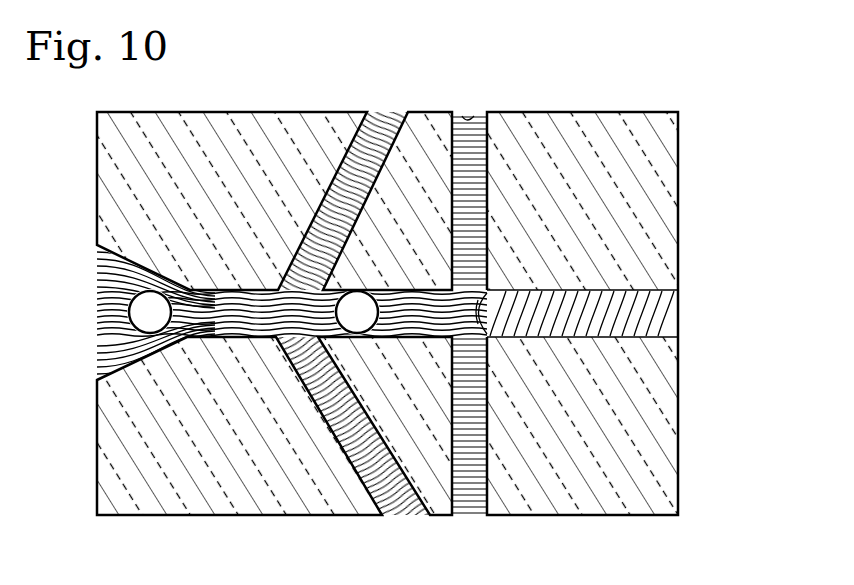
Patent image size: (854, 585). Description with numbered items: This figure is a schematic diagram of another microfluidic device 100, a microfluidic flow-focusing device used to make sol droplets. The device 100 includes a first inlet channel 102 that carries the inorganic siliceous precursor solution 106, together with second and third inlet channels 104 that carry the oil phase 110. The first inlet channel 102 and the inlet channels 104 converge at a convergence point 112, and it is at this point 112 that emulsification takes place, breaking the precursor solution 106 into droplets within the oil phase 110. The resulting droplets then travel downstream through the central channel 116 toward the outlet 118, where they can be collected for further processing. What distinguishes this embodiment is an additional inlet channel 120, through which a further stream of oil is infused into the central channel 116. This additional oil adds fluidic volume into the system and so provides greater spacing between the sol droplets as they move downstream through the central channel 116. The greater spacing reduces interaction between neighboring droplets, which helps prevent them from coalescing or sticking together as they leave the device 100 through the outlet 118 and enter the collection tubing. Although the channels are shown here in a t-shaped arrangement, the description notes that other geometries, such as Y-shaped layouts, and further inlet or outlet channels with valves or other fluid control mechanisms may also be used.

The microfluidic device 100 is at (624, 76).
The first inlet channel 102 is at (633, 328).
The second and third inlet channels 104 is at (471, 126).
The inorganic siliceous precursor solution 106 is at (674, 309).
The oil phase 110 is at (462, 125).
The convergence point 112 is at (461, 304).
The central channel 116 is at (212, 331).
The outlet 118 is at (86, 309).
The additional inlet channel 120 is at (358, 140).